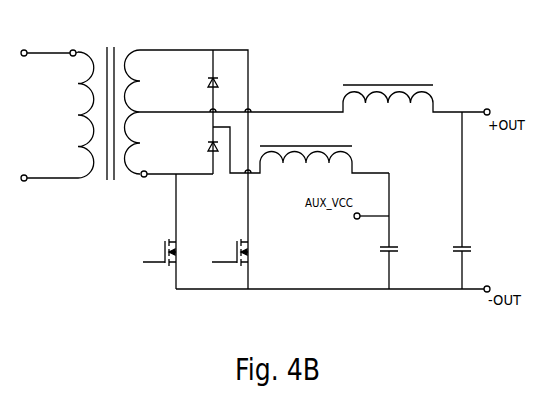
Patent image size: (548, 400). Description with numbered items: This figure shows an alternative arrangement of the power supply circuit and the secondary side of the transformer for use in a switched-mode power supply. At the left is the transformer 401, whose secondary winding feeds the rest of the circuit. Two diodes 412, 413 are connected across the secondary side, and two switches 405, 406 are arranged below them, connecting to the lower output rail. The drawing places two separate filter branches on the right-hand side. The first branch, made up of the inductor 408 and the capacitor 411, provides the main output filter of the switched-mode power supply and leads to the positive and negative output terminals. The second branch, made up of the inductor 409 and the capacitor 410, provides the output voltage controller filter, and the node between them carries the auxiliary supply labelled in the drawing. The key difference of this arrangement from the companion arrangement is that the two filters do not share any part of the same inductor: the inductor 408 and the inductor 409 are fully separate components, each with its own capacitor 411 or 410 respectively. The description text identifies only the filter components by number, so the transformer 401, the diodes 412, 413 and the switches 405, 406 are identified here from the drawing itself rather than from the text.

The transformer 401 is at (134, 49).
The diode 412 is at (205, 87).
The diode 413 is at (199, 146).
The synchronous rectifier switch 406 is at (161, 240).
The synchronous rectifier switch 405 is at (253, 242).
The inductor 408 is at (420, 84).
The inductor 409 is at (357, 158).
The capacitor 410 is at (395, 243).
The capacitor 411 is at (468, 243).